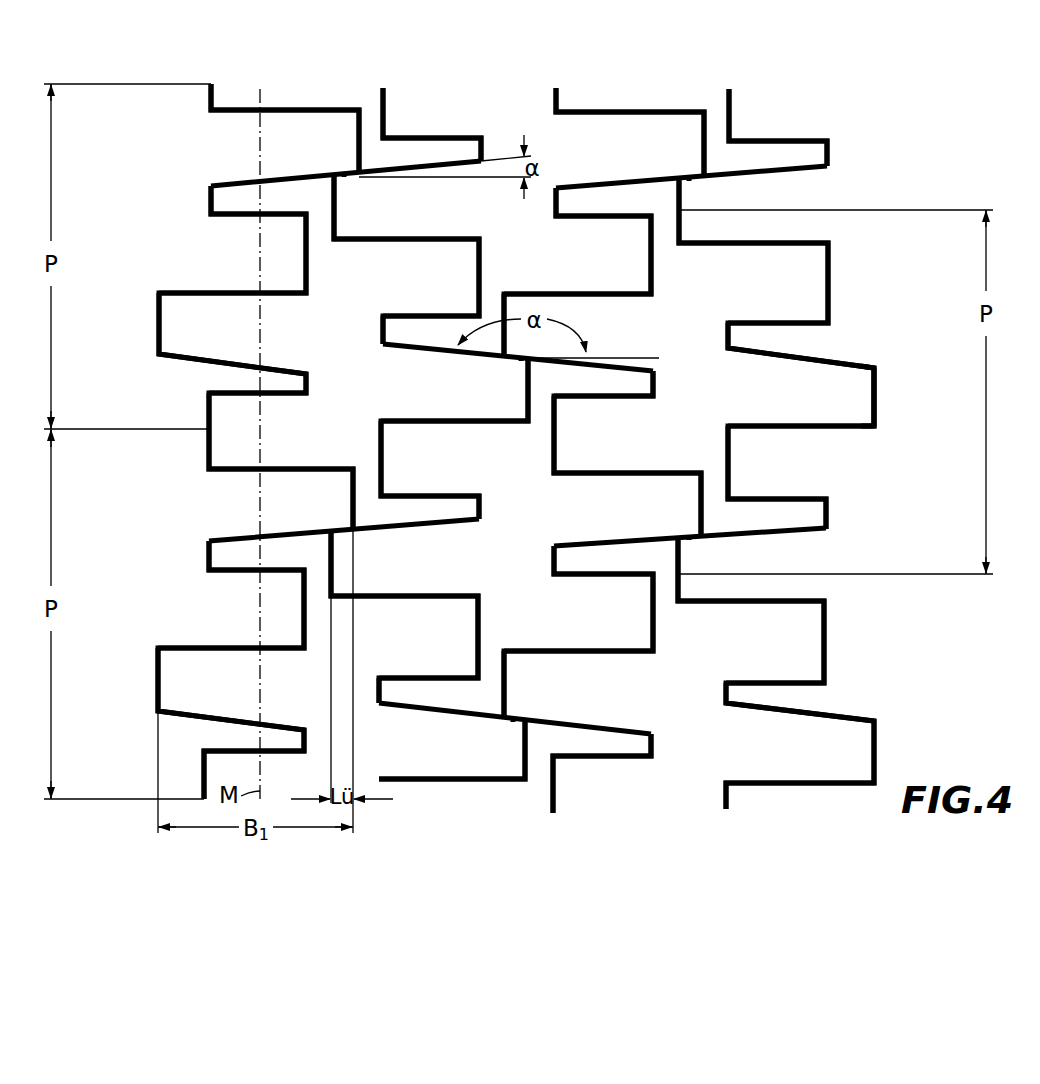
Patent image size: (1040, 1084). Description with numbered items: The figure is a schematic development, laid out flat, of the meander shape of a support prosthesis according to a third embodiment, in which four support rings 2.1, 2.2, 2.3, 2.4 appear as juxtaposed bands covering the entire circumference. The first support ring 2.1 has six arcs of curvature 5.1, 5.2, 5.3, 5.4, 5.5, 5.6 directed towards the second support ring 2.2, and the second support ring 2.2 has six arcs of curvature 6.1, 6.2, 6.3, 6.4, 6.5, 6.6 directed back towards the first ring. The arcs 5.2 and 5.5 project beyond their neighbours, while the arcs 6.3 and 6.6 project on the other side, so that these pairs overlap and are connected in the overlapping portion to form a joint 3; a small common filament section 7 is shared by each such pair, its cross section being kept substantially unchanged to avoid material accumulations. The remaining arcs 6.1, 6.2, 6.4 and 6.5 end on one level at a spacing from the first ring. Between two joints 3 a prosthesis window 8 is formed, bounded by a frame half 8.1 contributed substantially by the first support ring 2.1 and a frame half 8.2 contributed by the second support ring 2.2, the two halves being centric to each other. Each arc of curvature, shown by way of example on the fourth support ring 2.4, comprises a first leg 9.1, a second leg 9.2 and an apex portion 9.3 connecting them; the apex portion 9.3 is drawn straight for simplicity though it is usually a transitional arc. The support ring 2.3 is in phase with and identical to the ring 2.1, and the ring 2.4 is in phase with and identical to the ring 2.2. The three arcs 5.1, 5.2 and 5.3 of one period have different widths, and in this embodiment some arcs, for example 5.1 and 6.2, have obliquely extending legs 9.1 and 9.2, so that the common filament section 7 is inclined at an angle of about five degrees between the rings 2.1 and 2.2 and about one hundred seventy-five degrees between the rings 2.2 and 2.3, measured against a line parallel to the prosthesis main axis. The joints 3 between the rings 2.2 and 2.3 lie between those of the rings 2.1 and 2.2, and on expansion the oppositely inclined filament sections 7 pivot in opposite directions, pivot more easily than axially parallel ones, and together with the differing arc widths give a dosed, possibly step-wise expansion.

The first support ring 2.1 is at (287, 95).
The second support ring 2.2 is at (428, 95).
The third support ring 2.3 is at (617, 95).
The fourth support ring 2.4 is at (762, 95).
The joint 3 is at (343, 171).
The arc of curvature 5.1 is at (338, 108).
The arc of curvature 5.2 is at (290, 212).
The arc of curvature 5.3 is at (292, 352).
The arc of curvature 5.4 is at (305, 467).
The arc of curvature 5.5 is at (240, 539).
The arc of curvature 5.6 is at (236, 719).
The arc of curvature 6.1 is at (470, 136).
The arc of curvature 6.2 is at (430, 237).
The arc of curvature 6.3 is at (420, 314).
The arc of curvature 6.4 is at (437, 494).
The arc of curvature 6.5 is at (437, 594).
The arc of curvature 6.6 is at (440, 676).
The common filament section 7 is at (352, 176).
The prosthesis window 8 is at (318, 398).
The frame half 8.1 is at (216, 289).
The frame half 8.2 is at (482, 258).
The first leg 9.1 is at (867, 355).
The second leg 9.2 is at (864, 434).
The apex portion 9.3 is at (877, 395).